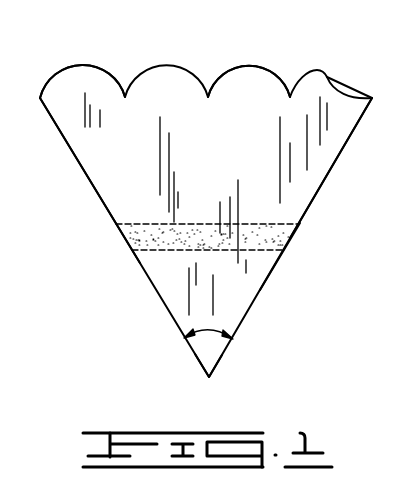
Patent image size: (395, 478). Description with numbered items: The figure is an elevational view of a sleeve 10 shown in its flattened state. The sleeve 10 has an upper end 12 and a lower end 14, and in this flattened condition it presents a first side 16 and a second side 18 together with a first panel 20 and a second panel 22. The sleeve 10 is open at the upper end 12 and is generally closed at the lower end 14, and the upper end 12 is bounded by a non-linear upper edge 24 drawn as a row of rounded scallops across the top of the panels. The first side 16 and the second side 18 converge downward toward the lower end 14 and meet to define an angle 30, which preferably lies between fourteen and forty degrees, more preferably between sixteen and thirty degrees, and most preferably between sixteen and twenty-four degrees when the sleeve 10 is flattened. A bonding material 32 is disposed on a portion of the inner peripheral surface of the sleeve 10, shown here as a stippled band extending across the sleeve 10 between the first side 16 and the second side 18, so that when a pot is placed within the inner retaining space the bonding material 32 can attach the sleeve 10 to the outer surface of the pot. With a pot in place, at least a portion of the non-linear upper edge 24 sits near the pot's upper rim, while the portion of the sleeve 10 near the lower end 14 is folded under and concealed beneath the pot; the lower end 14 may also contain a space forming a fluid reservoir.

The sleeve 10 is at (98, 291).
The upper end 12 is at (140, 70).
The lower end 14 is at (209, 378).
The first side 16 is at (107, 209).
The second side 18 is at (304, 210).
The first panel 20 is at (317, 168).
The second panel 22 is at (347, 90).
The non-linear upper edge 24 is at (247, 65).
The angle 30 is at (208, 330).
The bonding material 32 is at (255, 247).